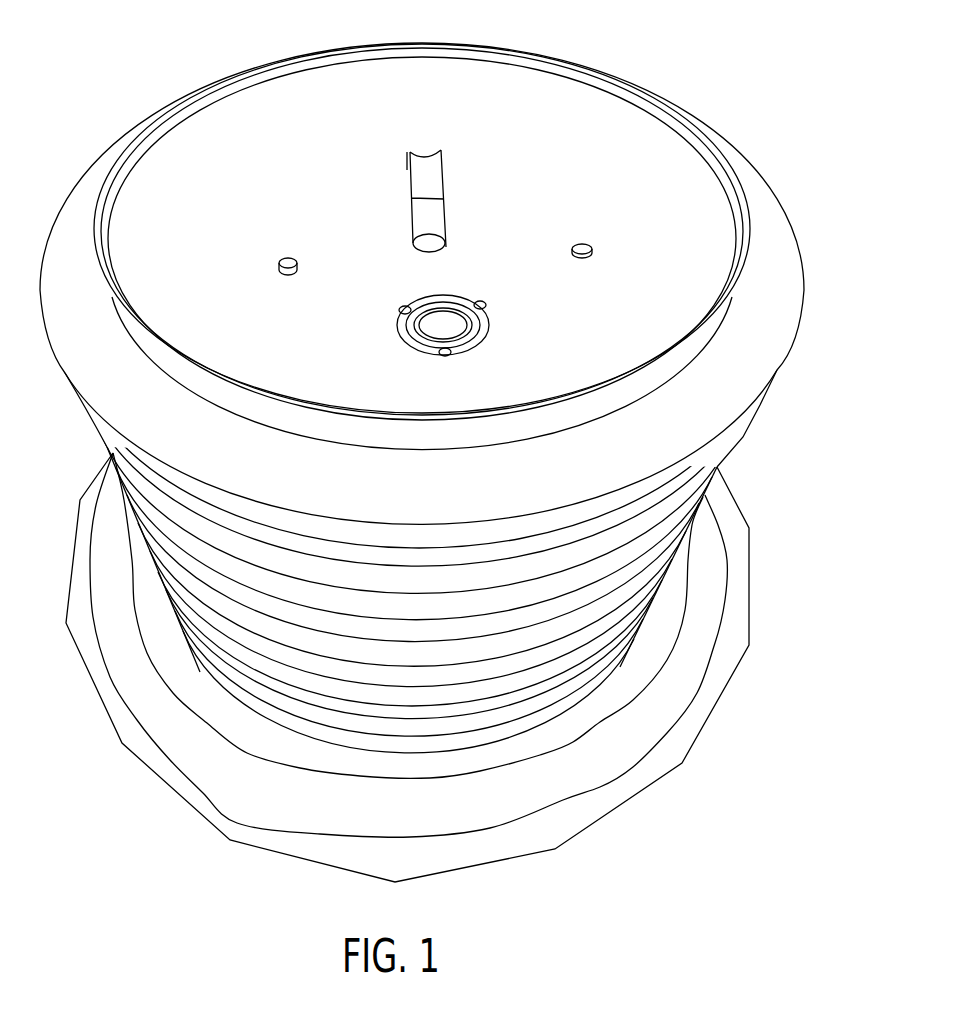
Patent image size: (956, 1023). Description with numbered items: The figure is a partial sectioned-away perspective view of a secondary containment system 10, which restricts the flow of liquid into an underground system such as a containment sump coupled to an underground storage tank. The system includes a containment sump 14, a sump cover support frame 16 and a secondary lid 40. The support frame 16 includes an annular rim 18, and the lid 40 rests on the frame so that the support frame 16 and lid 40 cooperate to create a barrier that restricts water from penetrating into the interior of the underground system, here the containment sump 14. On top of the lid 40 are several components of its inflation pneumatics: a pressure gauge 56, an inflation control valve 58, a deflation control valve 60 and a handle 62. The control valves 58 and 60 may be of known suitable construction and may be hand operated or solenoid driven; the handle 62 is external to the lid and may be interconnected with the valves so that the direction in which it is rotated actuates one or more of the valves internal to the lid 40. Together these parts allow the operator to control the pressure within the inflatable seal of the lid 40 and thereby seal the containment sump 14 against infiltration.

The secondary containment system 10 is at (172, 833).
The containment sump 14 is at (668, 557).
The sump cover support frame 16 is at (210, 390).
The annular rim 18 is at (775, 243).
The secondary lid 40 is at (534, 88).
The pressure gauge 56 is at (487, 330).
The inflation control valve 58 is at (284, 257).
The deflation control valve 60 is at (588, 252).
The handle 62 is at (427, 177).